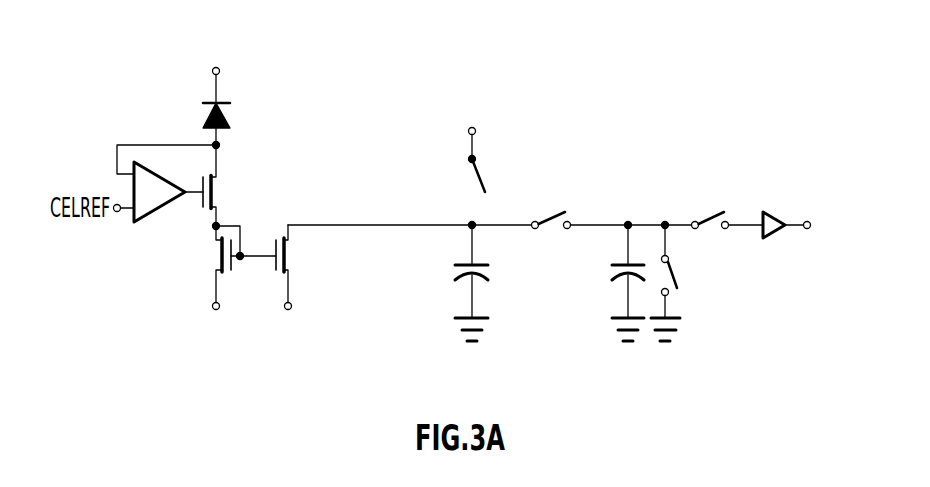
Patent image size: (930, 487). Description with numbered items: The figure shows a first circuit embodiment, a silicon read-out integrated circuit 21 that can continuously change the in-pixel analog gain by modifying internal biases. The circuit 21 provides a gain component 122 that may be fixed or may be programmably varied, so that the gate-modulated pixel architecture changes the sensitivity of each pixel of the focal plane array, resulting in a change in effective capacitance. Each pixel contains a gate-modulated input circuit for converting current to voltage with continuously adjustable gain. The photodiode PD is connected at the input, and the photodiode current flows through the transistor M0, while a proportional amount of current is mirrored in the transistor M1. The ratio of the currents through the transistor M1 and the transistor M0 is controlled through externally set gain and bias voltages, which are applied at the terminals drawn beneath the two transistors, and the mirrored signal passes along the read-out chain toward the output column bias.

The circuit 21 is at (740, 128).
The gain component 122 is at (338, 307).
The photodiode PD is at (231, 93).
The transistor M0 is at (229, 285).
The transistor M1 is at (297, 264).